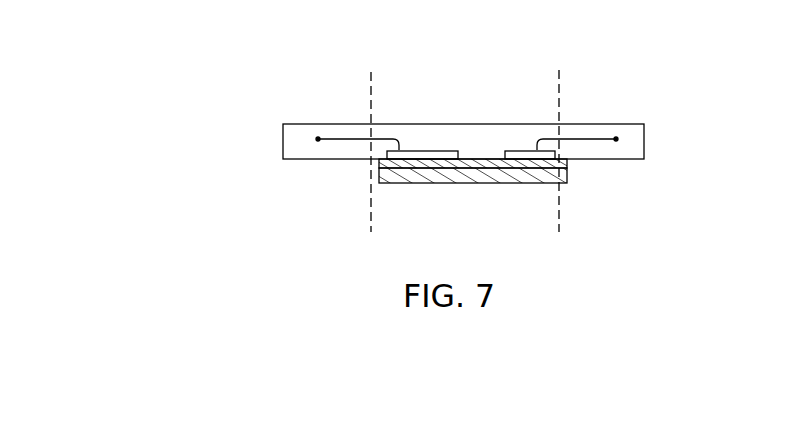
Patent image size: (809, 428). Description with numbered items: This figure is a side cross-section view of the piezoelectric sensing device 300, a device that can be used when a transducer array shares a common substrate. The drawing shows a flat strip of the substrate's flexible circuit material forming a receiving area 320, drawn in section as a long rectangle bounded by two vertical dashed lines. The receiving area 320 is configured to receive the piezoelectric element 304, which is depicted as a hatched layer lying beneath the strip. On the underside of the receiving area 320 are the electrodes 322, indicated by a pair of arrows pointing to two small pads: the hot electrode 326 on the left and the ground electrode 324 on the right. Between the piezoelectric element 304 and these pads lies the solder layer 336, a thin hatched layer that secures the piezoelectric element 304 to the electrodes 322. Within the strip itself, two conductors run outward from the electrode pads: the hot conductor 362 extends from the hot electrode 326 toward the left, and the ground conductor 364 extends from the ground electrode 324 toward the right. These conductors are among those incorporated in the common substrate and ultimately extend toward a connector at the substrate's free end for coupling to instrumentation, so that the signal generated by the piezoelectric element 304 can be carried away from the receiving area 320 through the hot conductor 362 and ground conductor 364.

The piezoelectric sensing device 300 is at (698, 63).
The receiving area 320 is at (560, 92).
The piezoelectric element 304 is at (423, 174).
The solder layer 336 is at (513, 163).
The hot electrode 326 is at (423, 149).
The ground electrode 324 is at (520, 149).
The electrodes 322 is at (503, 137).
The hot conductor 362 is at (343, 143).
The ground conductor 364 is at (592, 143).